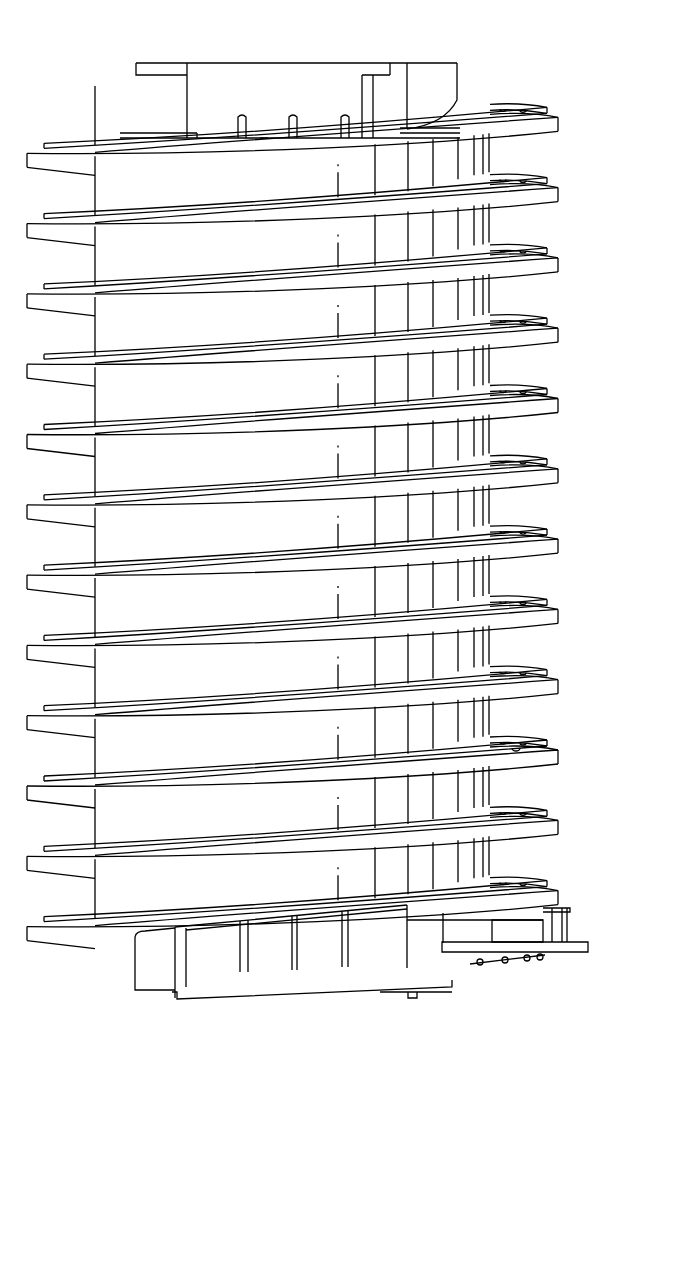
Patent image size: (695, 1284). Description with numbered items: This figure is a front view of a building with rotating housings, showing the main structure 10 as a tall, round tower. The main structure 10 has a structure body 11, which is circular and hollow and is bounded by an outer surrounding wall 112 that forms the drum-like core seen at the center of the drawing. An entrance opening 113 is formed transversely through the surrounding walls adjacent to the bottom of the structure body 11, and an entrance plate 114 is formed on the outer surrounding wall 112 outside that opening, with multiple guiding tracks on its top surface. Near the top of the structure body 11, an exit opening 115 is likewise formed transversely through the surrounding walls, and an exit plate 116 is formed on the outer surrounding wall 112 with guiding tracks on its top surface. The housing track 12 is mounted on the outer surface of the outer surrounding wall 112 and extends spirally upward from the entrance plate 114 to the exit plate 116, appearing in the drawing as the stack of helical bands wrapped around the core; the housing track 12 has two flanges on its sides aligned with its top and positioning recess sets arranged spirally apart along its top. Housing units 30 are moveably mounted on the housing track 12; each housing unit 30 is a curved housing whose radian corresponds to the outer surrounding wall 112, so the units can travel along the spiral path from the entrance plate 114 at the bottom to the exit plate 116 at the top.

The main structure 10 is at (485, 55).
The structure body 11 is at (494, 90).
The outer surrounding wall 112 is at (484, 167).
The entrance opening 113 is at (320, 963).
The entrance plate 114 is at (260, 988).
The exit opening 115 is at (292, 88).
The exit plate 116 is at (264, 142).
The housing track 12 is at (522, 746).
The housing units 30 is at (590, 916).